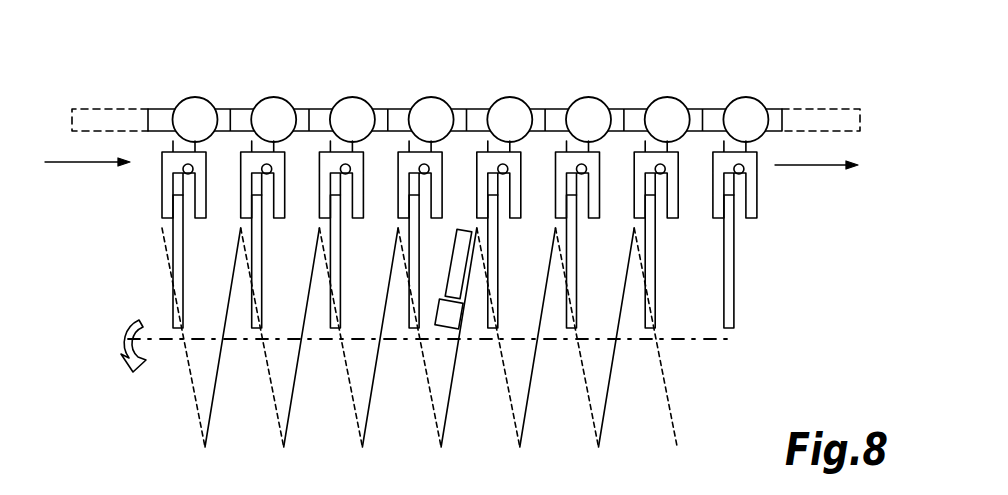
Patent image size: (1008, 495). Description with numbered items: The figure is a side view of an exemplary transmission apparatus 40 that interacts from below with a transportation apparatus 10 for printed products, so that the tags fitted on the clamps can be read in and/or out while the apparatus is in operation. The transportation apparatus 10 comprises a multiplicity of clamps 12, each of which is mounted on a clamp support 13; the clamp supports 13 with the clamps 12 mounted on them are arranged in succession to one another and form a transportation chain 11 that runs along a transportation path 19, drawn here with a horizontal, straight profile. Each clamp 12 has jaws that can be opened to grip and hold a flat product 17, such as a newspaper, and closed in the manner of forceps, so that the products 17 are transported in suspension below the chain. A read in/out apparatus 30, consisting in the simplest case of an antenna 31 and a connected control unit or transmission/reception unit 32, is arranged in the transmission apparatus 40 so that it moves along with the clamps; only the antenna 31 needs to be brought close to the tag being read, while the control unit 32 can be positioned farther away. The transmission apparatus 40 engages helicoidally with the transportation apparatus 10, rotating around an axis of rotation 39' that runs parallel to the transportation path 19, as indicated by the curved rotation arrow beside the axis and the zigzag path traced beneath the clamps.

The transportation apparatus 10 is at (312, 74).
The transportation chain 11 is at (820, 110).
The clamp 12 is at (490, 163).
The clamp support 13 is at (477, 113).
The flat product 17 is at (492, 258).
The transportation path 19 is at (818, 165).
The read in/out apparatus 30 is at (430, 274).
The antenna 31 is at (458, 247).
The control unit 32 is at (445, 322).
The axis of rotation 39' is at (443, 377).
The transmission apparatus 40 is at (156, 412).